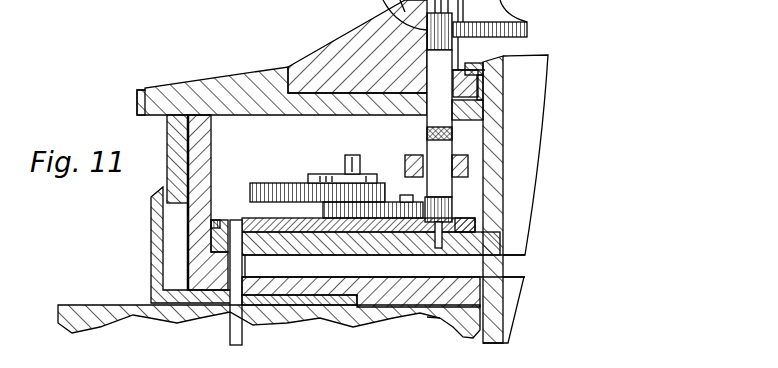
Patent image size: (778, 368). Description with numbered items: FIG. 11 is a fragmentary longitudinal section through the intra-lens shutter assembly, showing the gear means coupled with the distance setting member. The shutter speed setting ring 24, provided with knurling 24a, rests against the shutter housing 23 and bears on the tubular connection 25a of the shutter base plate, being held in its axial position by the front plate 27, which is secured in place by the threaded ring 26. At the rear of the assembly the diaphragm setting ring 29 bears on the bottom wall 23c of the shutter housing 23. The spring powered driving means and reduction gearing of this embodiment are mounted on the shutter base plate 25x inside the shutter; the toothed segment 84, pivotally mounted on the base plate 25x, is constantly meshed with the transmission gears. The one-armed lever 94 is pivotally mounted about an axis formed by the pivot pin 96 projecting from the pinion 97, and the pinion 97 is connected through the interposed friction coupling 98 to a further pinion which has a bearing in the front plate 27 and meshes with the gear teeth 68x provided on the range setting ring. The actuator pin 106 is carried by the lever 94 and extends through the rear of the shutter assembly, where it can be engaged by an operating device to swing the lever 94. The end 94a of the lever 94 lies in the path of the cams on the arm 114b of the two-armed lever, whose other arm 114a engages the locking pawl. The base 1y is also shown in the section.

The arm of two-armed lever 114a is at (320, 10).
The shutter speed setting ring 24 is at (215, 88).
The knurling 24a is at (137, 96).
The front plate 27 is at (342, 47).
The shutter housing 23 is at (198, 151).
The end of lever 94a is at (227, 220).
The toothed segment 84 is at (284, 182).
The friction coupling 98 is at (426, 133).
The gear teeth 68x is at (528, 28).
The threaded ring 26 is at (485, 72).
The tubular connection 25a is at (492, 138).
The arm of two-armed lever 114b is at (214, 222).
The diaphragm setting ring 29 is at (153, 258).
The base 1y is at (71, 299).
The actuator pin 106 is at (232, 322).
The one-armed lever 94 is at (308, 235).
The shutter base plate 25x is at (405, 247).
The bottom wall 23c is at (423, 305).
The pinion 97 is at (453, 211).
The pivot pin 96 is at (463, 232).